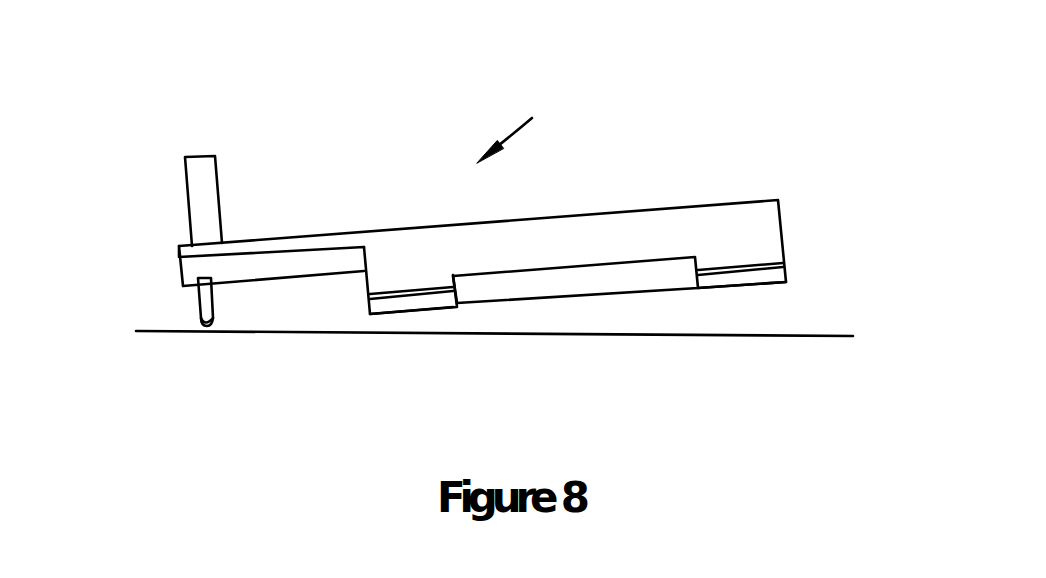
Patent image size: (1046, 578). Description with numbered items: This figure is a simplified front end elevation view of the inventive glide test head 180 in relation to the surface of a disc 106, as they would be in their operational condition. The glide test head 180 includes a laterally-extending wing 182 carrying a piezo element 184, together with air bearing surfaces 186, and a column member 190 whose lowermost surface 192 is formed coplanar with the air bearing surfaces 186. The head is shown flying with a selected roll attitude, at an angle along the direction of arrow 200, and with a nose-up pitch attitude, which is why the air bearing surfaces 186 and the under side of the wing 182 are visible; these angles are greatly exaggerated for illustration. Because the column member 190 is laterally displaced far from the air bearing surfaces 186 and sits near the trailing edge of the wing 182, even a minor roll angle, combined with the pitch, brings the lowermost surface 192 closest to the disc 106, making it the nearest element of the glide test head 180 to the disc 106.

The disc 106 is at (818, 335).
The glide test head 180 is at (688, 140).
The laterally-extending wing 182 is at (272, 243).
The piezo element 184 is at (200, 180).
The air bearing surfaces 186 is at (417, 300).
The column member 190 is at (198, 305).
The lowermost surface 192 is at (207, 330).
The arrow 200 is at (567, 119).